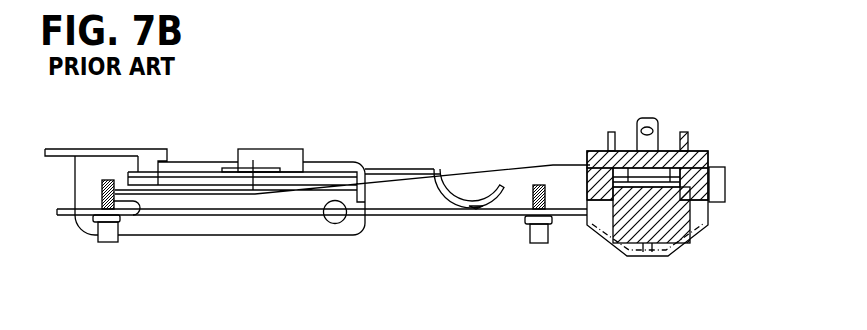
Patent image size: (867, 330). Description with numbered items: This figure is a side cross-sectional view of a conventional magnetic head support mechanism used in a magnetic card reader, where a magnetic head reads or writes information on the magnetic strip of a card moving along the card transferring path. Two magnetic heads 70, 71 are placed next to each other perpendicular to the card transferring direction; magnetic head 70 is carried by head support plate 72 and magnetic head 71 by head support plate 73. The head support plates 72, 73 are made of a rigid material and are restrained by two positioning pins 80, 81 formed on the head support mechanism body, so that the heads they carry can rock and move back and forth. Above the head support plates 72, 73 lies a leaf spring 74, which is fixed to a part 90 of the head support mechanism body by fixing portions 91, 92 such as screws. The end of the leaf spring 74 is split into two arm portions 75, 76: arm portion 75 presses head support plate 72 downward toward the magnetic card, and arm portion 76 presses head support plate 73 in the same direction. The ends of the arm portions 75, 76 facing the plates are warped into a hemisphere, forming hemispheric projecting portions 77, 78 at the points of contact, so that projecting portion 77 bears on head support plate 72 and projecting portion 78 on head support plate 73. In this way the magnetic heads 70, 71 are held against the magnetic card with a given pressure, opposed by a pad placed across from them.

The magnetic head 70 is at (677, 184).
The magnetic head 71 is at (702, 178).
The head support plate 72 is at (329, 217).
The head support plate 73 is at (378, 228).
The leaf spring 74 is at (387, 170).
The arm portion 75 is at (421, 242).
The arm portion 76 is at (450, 197).
The hemispheric projecting portion 77 is at (470, 249).
The hemispheric projecting portion 78 is at (471, 209).
The positioning pin 80 is at (545, 243).
The positioning pin 81 is at (102, 242).
The part of the head support mechanism body 90 is at (293, 155).
The fixing portion 91 is at (252, 167).
The fixing portion 92 is at (158, 167).